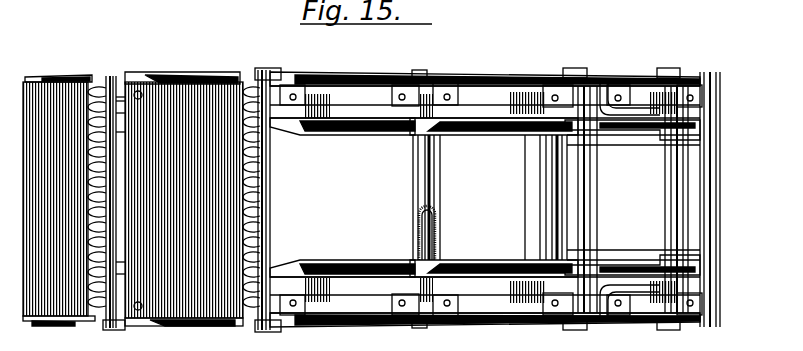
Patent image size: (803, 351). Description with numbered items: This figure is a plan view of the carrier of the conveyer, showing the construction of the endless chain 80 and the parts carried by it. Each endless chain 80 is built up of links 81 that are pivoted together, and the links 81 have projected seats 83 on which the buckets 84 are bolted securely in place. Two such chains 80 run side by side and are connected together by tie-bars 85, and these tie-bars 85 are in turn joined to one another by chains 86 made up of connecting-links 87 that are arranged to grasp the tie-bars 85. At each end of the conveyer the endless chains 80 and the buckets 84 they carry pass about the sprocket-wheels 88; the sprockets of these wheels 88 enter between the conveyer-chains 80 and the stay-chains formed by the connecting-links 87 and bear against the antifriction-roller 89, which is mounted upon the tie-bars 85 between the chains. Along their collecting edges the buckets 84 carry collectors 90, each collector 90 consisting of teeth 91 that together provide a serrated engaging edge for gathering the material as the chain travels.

The endless chain 80 is at (486, 76).
The links 81 is at (356, 80).
The projected seats 83 is at (298, 94).
The buckets 84 is at (182, 84).
The tie-bars 85 is at (430, 238).
The chains 86 is at (342, 197).
The connecting-links 87 is at (478, 128).
The sprocket-wheels 88 is at (637, 120).
The antifriction-roller 89 is at (402, 108).
The collectors 90 is at (109, 78).
The teeth 91 is at (95, 86).